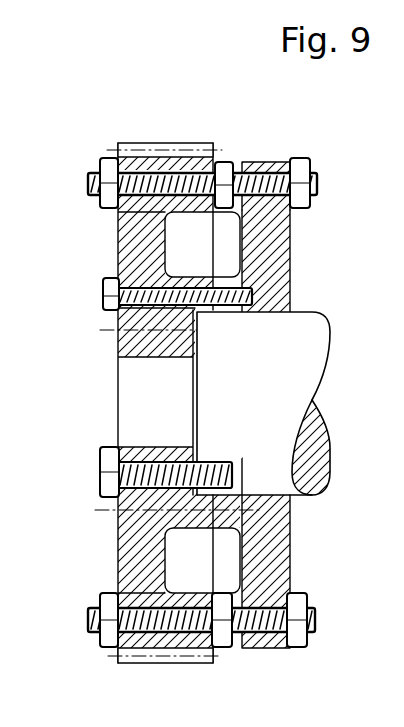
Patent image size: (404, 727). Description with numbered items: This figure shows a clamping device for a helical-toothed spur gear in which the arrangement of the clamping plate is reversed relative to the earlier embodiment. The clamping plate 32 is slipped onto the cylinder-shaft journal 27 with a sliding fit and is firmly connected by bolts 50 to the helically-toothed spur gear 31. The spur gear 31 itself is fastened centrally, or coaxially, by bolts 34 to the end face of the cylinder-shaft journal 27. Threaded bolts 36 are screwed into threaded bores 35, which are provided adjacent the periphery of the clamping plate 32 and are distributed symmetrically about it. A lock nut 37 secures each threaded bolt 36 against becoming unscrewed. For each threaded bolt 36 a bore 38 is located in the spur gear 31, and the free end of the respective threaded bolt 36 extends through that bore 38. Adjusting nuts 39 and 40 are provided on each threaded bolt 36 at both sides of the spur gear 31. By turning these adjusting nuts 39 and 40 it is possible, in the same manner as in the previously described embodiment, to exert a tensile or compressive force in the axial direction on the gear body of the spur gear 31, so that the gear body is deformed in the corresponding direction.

The cylinder-shaft journal 27 is at (313, 340).
The helically-toothed spur gear 31 is at (137, 142).
The clamping plate 32 is at (270, 165).
The bolts 34 is at (97, 452).
The threaded bores 35 is at (253, 165).
The threaded bolts 36 is at (294, 162).
The lock nut 37 is at (306, 206).
The bore 38 is at (150, 153).
The adjusting nut 39 is at (221, 160).
The adjusting nut 40 is at (108, 203).
The bolts 50 is at (108, 308).